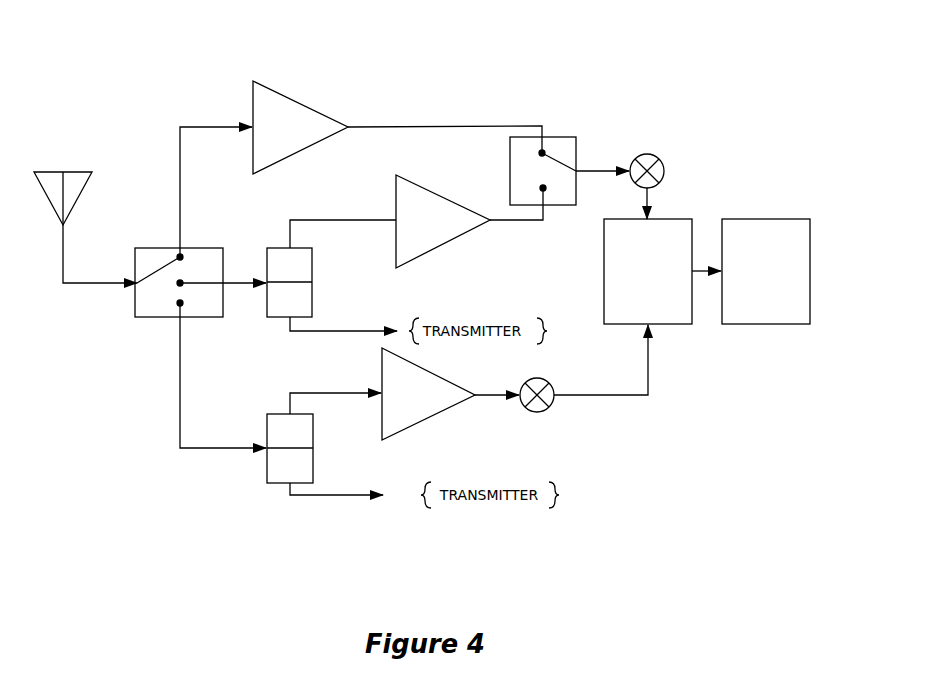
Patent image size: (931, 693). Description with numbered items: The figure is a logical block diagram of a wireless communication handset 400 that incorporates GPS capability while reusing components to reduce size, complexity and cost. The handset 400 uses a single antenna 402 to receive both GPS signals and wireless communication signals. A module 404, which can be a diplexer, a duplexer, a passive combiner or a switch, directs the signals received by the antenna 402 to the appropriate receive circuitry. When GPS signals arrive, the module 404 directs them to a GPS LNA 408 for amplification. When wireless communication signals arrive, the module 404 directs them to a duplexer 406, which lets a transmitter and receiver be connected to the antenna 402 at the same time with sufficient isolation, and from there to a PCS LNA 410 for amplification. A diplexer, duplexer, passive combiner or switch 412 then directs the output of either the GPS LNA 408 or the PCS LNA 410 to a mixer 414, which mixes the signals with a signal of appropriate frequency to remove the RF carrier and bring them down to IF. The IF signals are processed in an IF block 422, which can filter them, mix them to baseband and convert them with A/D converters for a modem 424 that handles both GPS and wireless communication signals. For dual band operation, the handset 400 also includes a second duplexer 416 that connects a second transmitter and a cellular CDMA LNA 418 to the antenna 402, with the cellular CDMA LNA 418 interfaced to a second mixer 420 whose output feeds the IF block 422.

The handset 400 is at (440, 44).
The antenna 402 is at (92, 173).
The module 404 is at (192, 248).
The duplexer 406 is at (305, 245).
The GPS LNA 408 is at (290, 97).
The PCS LNA 410 is at (433, 190).
The switch 412 is at (555, 135).
The mixer 414 is at (663, 157).
The second duplexer 416 is at (268, 412).
The cellular CDMA LNA 418 is at (435, 368).
The second mixer 420 is at (552, 375).
The IF block 422 is at (670, 218).
The modem 424 is at (767, 217).